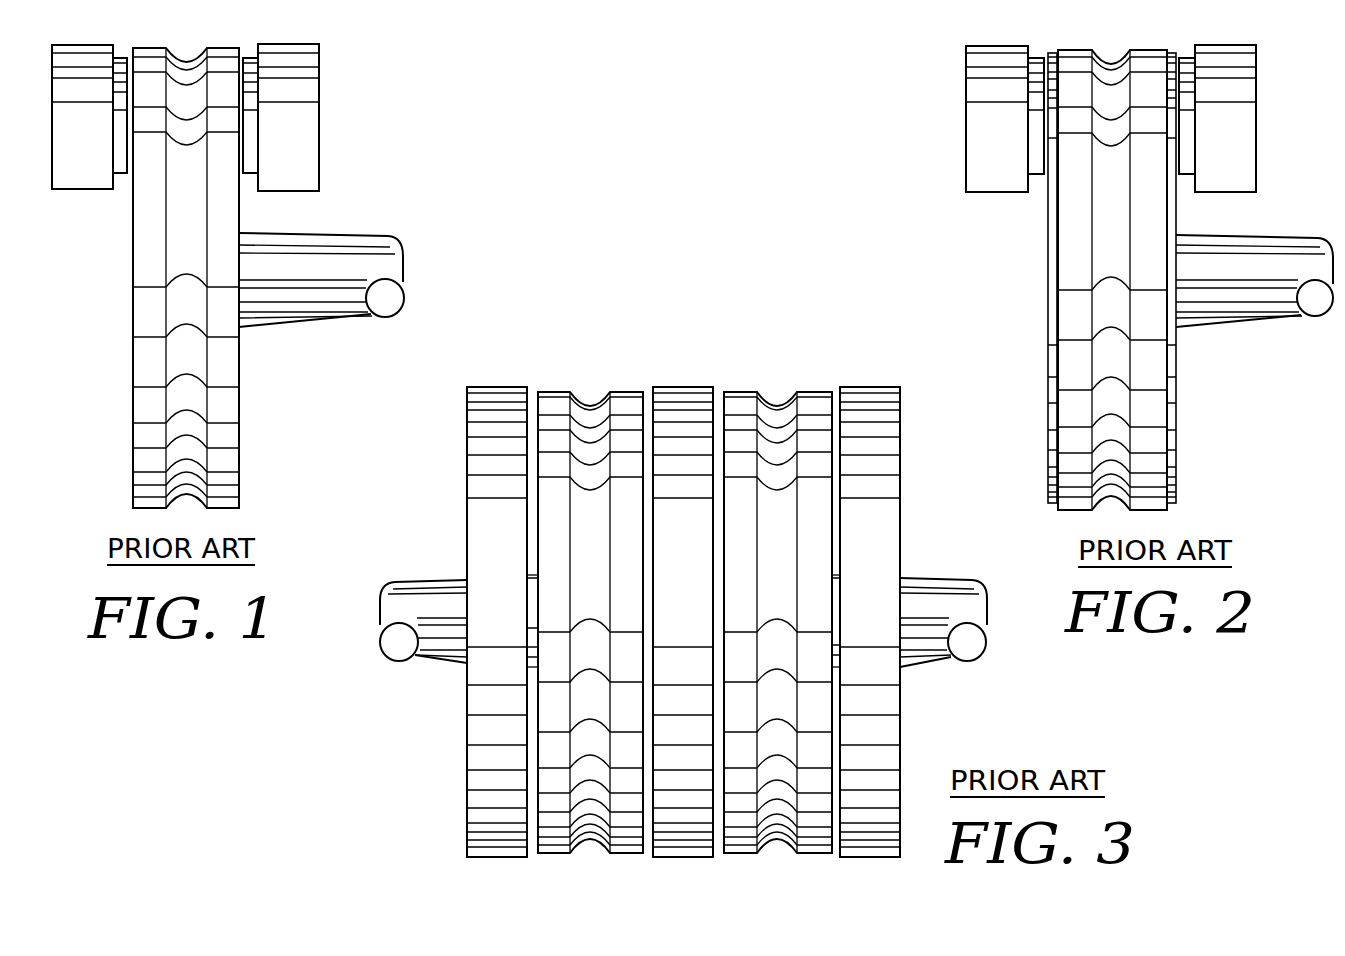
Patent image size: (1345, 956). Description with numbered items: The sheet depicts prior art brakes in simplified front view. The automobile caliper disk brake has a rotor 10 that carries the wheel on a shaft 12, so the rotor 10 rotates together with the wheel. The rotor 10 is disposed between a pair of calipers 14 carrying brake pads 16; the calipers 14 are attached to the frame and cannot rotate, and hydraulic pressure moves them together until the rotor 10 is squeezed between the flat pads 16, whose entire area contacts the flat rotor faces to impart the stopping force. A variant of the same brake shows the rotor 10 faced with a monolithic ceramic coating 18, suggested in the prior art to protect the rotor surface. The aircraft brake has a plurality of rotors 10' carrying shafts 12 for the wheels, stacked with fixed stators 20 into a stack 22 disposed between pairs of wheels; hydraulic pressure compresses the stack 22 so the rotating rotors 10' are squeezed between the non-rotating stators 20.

In FIG. 1, the rotor 10 is at (218, 278).
In FIG. 2, the rotor 10 is at (1143, 280).
In FIG. 3, the rotor 10' is at (685, 596).
In FIG. 1, the shaft 12 is at (340, 257).
In FIG. 2, the shaft 12 is at (1265, 255).
In FIG. 3, the shaft 12 is at (427, 602).
In FIG. 1, the calipers 14 is at (87, 167).
In FIG. 2, the calipers 14 is at (1010, 170).
In FIG. 1, the brake pads 16 is at (127, 147).
In FIG. 2, the brake pads 16 is at (1037, 140).
In FIG. 2, the monolithic ceramic coating 18 is at (1048, 305).
In FIG. 3, the stators 20 is at (485, 400).
In FIG. 3, the stack 22 is at (437, 728).